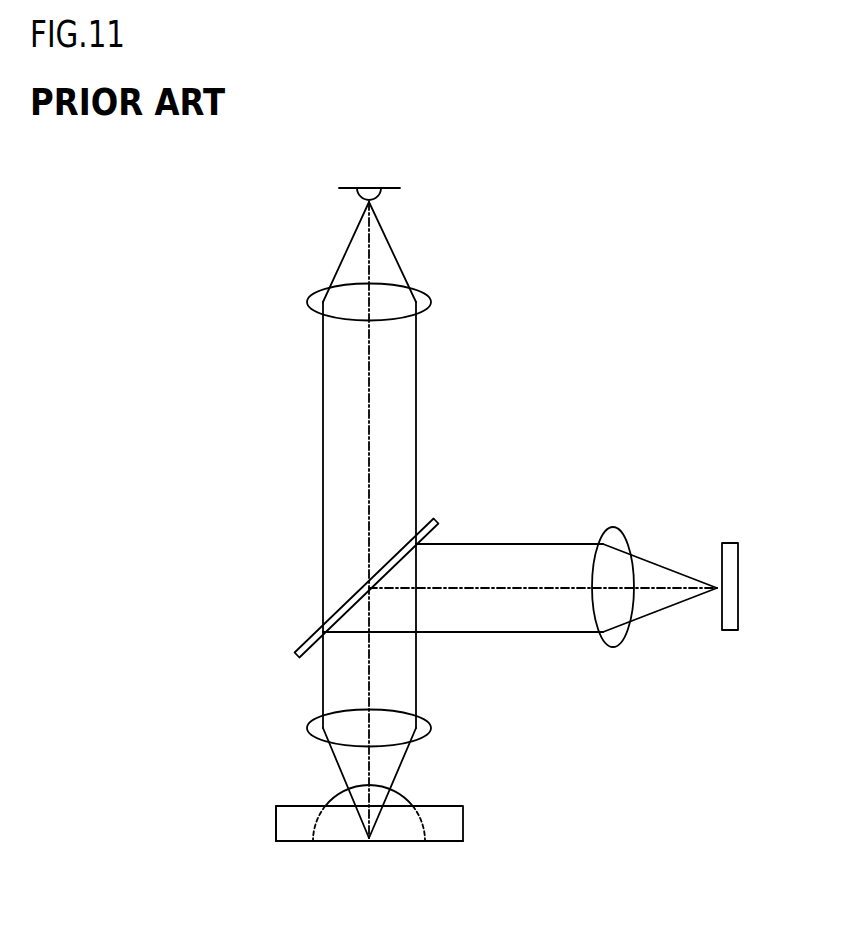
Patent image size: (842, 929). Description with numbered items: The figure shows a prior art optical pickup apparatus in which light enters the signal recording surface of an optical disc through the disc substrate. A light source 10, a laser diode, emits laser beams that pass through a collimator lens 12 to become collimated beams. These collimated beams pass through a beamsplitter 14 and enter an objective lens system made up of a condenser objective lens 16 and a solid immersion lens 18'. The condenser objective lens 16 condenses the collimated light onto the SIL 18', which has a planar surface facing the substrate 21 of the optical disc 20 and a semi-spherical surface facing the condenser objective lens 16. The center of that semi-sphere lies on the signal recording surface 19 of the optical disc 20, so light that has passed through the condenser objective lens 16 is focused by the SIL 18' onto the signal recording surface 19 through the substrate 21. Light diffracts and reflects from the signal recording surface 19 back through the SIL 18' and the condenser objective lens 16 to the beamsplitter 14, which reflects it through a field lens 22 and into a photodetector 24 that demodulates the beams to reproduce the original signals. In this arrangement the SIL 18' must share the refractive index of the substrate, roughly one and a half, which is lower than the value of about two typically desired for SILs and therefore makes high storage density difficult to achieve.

The light source 10 is at (373, 187).
The collimator lens 12 is at (398, 320).
The beamsplitter 14 is at (434, 518).
The condenser objective lens 16 is at (432, 728).
The solid immersion lens 18' is at (396, 801).
The signal recording surface 19 is at (276, 841).
The optical disc 20 is at (468, 823).
The substrate 21 is at (276, 823).
The field lens 22 is at (625, 532).
The photodetector 24 is at (731, 542).